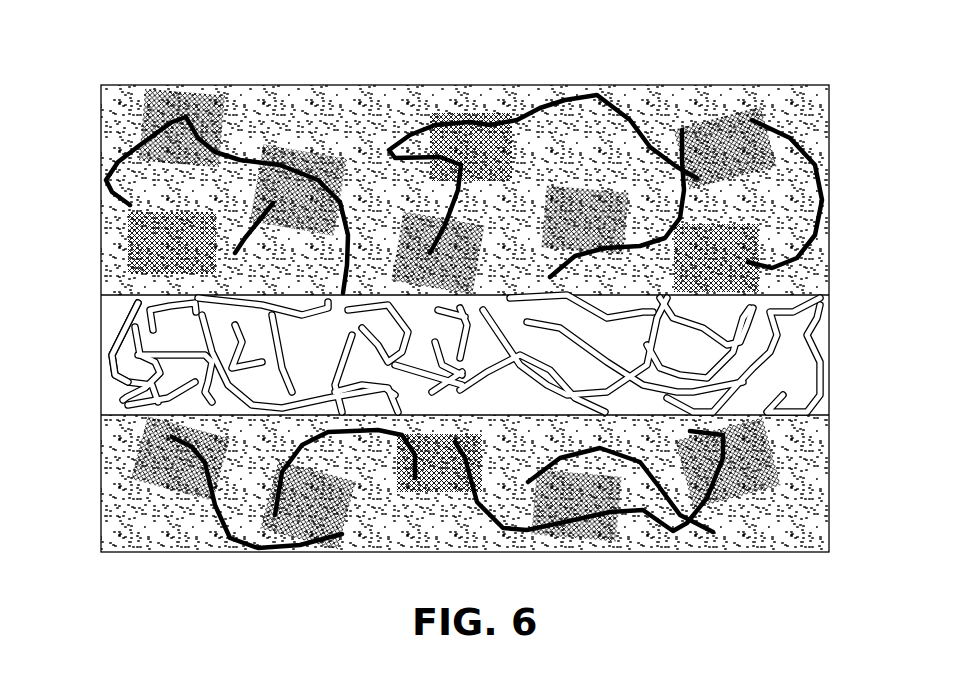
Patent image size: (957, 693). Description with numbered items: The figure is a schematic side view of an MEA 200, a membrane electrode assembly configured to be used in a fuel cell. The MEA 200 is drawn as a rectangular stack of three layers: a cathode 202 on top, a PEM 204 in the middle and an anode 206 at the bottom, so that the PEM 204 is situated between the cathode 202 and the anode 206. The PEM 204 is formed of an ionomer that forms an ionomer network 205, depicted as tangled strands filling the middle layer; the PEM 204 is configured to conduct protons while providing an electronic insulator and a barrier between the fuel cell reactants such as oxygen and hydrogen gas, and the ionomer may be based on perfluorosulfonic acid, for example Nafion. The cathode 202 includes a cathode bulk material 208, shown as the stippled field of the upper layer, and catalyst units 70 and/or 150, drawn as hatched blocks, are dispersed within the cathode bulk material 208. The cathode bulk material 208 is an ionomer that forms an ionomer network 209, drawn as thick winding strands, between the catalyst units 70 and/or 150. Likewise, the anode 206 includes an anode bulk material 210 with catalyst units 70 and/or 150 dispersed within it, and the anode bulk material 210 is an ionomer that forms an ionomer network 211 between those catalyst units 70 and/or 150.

The MEA 200 is at (63, 544).
The cathode 202 is at (511, 161).
The PEM 204 is at (476, 346).
The anode 206 is at (511, 516).
The cathode bulk material 208 is at (295, 98).
The ionomer network 209 is at (603, 95).
The ionomer network 205 is at (118, 333).
The anode bulk material 210 is at (200, 540).
The ionomer network 211 is at (300, 552).
The catalyst units 70 is at (392, 324).
The catalyst units 150 is at (177, 98).